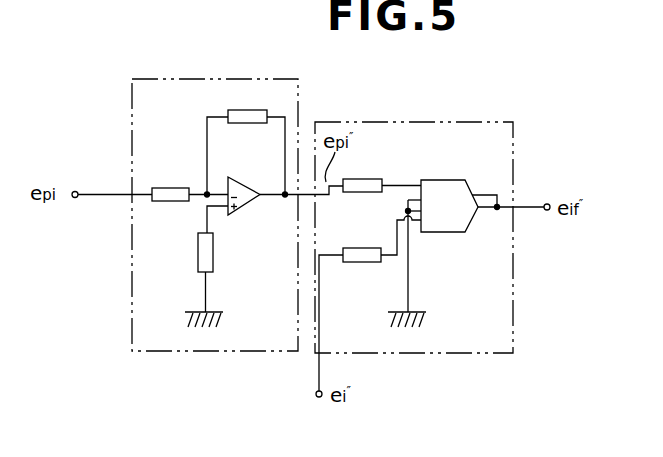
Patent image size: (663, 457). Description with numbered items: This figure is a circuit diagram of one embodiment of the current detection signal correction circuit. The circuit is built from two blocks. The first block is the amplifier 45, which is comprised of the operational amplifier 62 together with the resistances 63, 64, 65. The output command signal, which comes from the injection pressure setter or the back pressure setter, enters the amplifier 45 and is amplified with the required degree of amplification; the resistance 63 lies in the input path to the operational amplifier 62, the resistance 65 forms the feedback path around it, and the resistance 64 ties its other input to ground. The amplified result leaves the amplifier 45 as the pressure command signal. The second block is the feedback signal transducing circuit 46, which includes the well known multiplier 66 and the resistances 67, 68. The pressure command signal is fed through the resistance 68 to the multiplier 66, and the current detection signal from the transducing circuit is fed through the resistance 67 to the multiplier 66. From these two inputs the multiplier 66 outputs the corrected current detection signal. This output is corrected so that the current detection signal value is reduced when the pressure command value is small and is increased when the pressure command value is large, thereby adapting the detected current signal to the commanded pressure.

The amplifier 45 is at (201, 79).
The feedback signal transducing circuit 46 is at (436, 122).
The operational amplifier 62 is at (250, 200).
The resistance 63 is at (167, 201).
The resistance 64 is at (213, 253).
The resistance 65 is at (250, 123).
The multiplier 66 is at (458, 232).
The resistance 67 is at (363, 262).
The resistance 68 is at (368, 179).